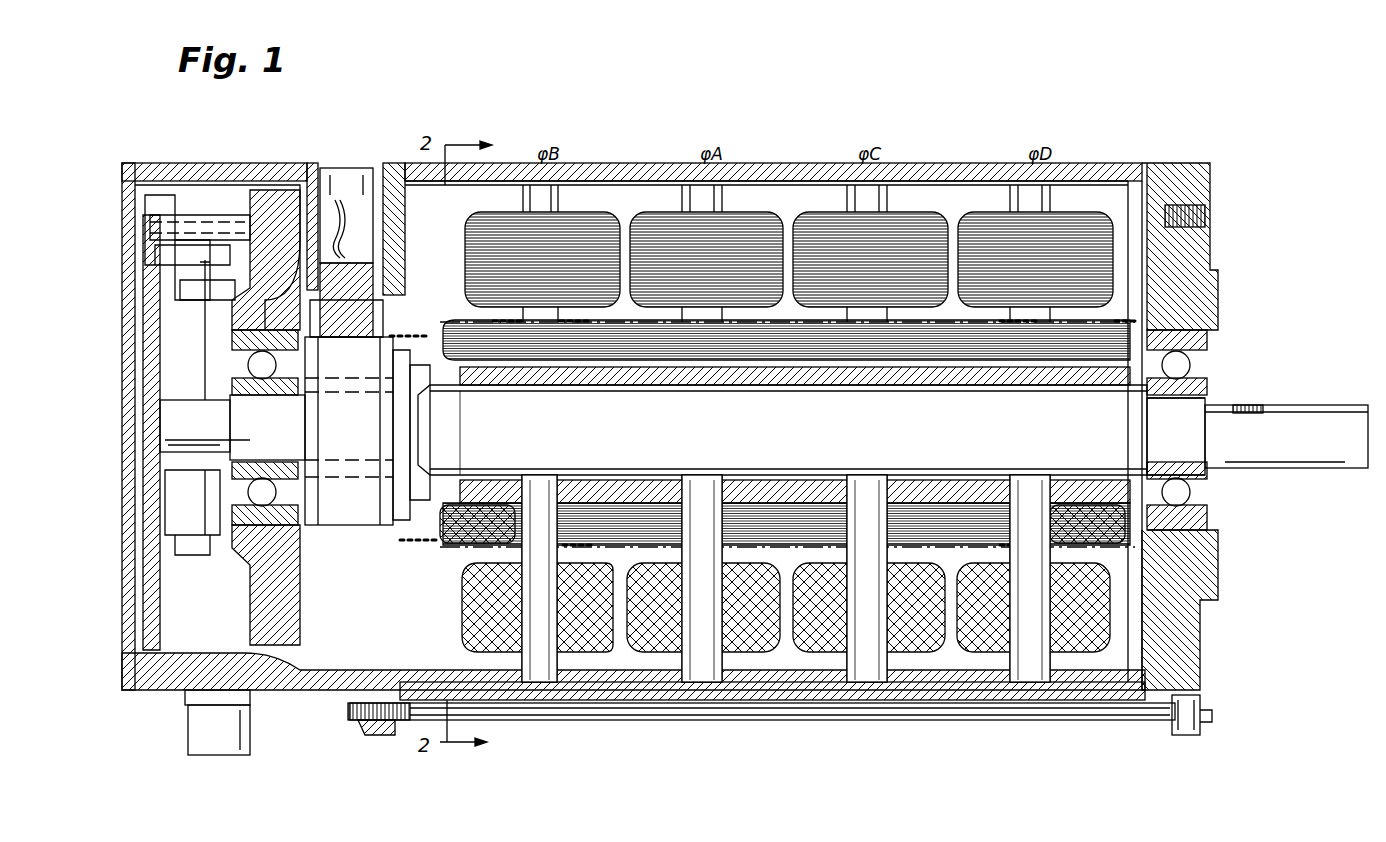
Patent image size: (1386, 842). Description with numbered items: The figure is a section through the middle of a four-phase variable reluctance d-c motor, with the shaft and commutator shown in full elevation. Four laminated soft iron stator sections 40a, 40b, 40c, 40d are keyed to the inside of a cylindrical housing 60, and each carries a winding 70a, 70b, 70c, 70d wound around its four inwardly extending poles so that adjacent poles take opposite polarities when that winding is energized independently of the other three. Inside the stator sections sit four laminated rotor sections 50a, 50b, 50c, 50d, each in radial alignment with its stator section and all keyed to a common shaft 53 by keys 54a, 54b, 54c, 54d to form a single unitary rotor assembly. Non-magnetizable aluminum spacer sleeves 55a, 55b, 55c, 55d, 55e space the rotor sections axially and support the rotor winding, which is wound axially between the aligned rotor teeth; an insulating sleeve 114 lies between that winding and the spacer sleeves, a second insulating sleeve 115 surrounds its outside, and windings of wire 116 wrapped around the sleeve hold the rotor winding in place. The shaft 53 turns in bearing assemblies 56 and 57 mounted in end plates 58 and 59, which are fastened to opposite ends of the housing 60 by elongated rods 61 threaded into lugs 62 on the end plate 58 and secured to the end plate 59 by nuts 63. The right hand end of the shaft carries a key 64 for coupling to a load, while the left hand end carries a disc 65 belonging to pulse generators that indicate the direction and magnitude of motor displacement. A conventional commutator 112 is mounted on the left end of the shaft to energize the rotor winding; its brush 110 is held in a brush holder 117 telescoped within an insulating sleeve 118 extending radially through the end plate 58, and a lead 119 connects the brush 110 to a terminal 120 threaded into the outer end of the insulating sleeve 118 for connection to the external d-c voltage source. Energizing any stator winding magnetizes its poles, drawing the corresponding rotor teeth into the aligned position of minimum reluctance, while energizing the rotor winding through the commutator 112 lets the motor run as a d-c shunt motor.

The shaft 53 is at (1292, 468).
The bearing assembly 56 is at (240, 398).
The bearing assembly 57 is at (1168, 398).
The end plate 58 is at (240, 545).
The end plate 59 is at (1220, 570).
The cylindrical housing 60 is at (618, 700).
The elongated rods 61 is at (748, 720).
The lugs 62 is at (372, 735).
The nuts 63 is at (1186, 735).
The key 64 is at (1272, 405).
The disc 65 is at (205, 318).
The winding 70a is at (650, 222).
The winding 70b is at (500, 215).
The winding 70c is at (810, 222).
The winding 70d is at (970, 225).
The stator section 40a is at (692, 690).
The stator section 40b is at (540, 690).
The stator section 40c is at (860, 690).
The stator section 40d is at (1025, 690).
The key 54a is at (712, 478).
The key 54b is at (545, 478).
The key 54c is at (862, 478).
The key 54d is at (1038, 478).
The rotor section 50a is at (735, 388).
The rotor section 50b is at (570, 388).
The rotor section 50c is at (890, 388).
The rotor section 50d is at (1057, 388).
The spacer sleeve 55a is at (480, 388).
The spacer sleeve 55b is at (638, 388).
The spacer sleeve 55c is at (800, 388).
The spacer sleeve 55d is at (972, 388).
The spacer sleeve 55e is at (1110, 388).
The brush 110 is at (345, 300).
The commutator 112 is at (330, 525).
The insulating sleeve 114 is at (447, 500).
The insulating sleeve 115 is at (425, 540).
The windings of wire 116 is at (1130, 322).
The brush holder 117 is at (322, 350).
The insulating sleeve 118 is at (312, 163).
The brush insulator 119 is at (390, 163).
The terminal 120 is at (335, 168).